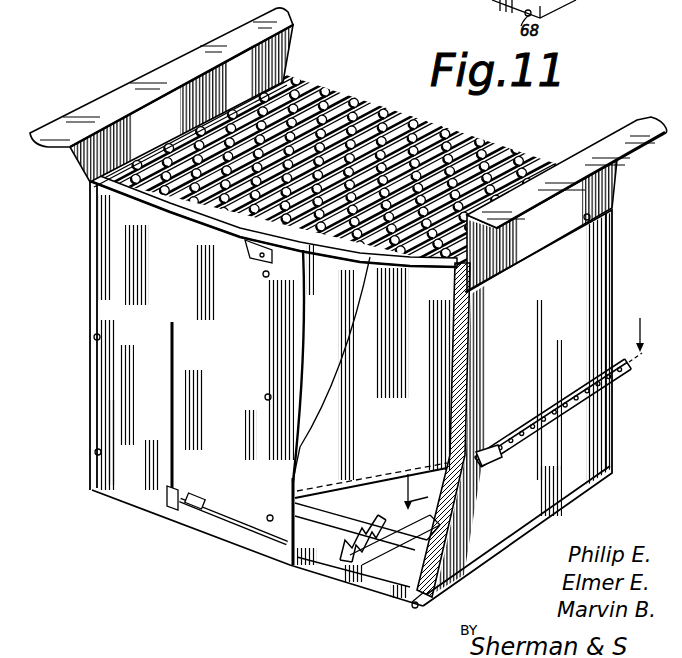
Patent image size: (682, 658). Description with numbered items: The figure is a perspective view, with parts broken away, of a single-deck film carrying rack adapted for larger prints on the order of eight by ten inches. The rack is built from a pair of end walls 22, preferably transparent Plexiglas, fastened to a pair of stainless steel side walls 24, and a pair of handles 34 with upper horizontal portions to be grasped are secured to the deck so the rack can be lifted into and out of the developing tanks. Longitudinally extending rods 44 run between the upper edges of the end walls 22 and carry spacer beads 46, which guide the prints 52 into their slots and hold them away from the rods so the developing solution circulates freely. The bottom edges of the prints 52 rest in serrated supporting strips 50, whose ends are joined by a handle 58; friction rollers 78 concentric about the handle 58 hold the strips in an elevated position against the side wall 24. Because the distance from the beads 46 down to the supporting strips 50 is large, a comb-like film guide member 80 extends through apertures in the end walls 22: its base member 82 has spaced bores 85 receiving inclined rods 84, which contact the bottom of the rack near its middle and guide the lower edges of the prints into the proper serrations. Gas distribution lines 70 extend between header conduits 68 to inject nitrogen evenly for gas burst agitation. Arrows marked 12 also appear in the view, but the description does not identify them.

The handles 34 is at (155, 79).
The rods 44 is at (306, 106).
The spacer beads 46 is at (396, 108).
The side walls 24 is at (108, 289).
The prints 52 is at (337, 380).
The direction of flow arrow 12 is at (524, 414).
The comb-like film guide member 80 is at (624, 389).
The spaced bores 85 is at (536, 425).
The base member 82 is at (523, 441).
The end walls 22 is at (614, 447).
The rods 84 is at (334, 497).
The gas distribution lines 70 is at (403, 558).
The serrated supporting strips 50 is at (345, 566).
The handle 58 is at (224, 521).
The friction rollers 78 is at (217, 498).
The header conduits 68 is at (413, 607).